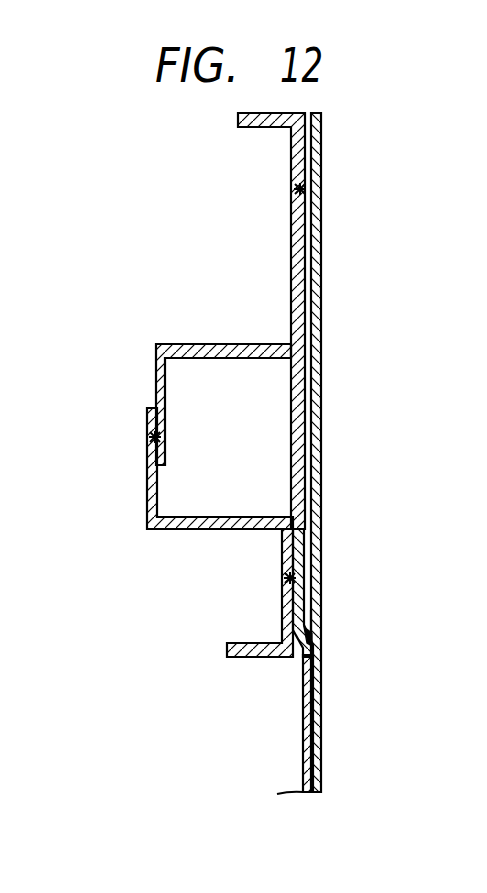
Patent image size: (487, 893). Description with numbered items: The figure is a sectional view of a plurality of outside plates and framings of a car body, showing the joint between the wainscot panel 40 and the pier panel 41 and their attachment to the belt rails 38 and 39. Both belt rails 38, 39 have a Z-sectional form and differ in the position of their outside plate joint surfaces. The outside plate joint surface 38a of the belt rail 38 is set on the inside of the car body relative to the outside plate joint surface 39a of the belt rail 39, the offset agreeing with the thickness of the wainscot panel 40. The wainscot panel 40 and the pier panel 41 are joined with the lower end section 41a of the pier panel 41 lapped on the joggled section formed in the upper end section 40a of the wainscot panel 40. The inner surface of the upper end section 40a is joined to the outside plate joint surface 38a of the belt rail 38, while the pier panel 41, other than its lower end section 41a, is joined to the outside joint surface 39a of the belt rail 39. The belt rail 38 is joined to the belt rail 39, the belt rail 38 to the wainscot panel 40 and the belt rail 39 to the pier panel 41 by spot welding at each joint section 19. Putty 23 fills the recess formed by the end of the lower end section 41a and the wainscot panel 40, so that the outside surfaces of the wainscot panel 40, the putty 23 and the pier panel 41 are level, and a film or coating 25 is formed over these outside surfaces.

The joint section 19 is at (295, 188).
The putty 23 is at (310, 632).
The film or coating 25 is at (322, 757).
The belt rail 38 is at (150, 488).
The outside plate joint surface 38a is at (282, 626).
The belt rail 39 is at (156, 383).
The outside plate joint surface 39a is at (291, 249).
The wainscot panel 40 is at (322, 684).
The upper end section 40a is at (301, 594).
The pier panel 41 is at (322, 424).
The lower end section 41a is at (313, 620).